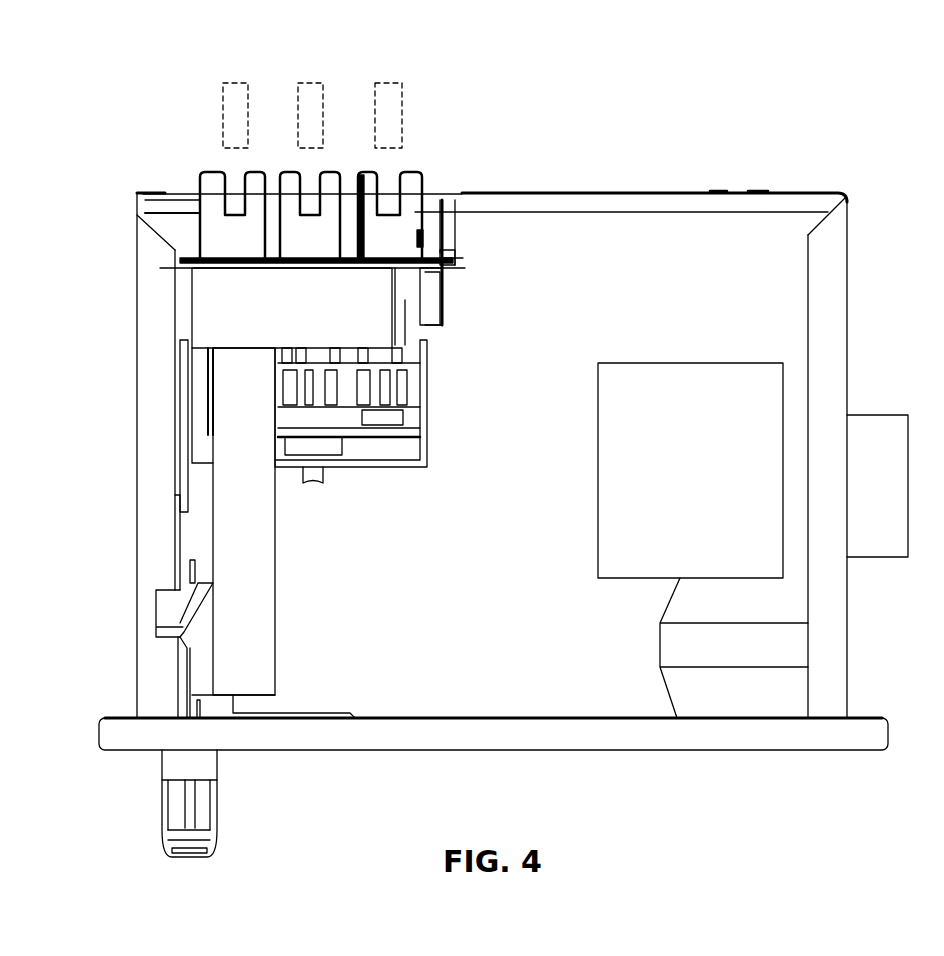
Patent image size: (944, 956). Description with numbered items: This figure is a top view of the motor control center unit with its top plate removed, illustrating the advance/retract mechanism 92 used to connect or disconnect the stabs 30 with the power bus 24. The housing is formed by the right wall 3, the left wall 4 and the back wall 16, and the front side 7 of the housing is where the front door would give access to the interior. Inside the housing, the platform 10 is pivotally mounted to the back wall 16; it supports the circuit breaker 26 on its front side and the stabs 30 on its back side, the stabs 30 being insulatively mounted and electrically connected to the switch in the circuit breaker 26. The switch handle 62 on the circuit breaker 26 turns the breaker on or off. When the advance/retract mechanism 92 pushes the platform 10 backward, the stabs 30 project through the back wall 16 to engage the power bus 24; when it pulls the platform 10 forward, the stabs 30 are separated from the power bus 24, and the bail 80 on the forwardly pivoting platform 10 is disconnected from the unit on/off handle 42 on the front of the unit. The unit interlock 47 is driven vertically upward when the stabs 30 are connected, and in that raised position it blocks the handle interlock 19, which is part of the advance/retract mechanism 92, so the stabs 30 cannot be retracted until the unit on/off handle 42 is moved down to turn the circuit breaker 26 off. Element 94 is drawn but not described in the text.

The right wall 3 is at (137, 466).
The left wall 4 is at (808, 615).
The front side 7 is at (685, 777).
The platform 10 is at (447, 237).
The back wall 16 is at (670, 193).
The handle interlock 19 is at (168, 623).
The electrical power bus 24 is at (228, 82).
The circuit breaker 26 is at (440, 330).
The stabs 30 is at (420, 173).
The unit on/off handle 42 is at (160, 847).
The unit interlock 47 is at (180, 543).
The switch handle 62 is at (323, 483).
The bail 80 is at (412, 467).
The advance/retract mechanism 92 is at (203, 316).
The side plate 94 is at (183, 296).